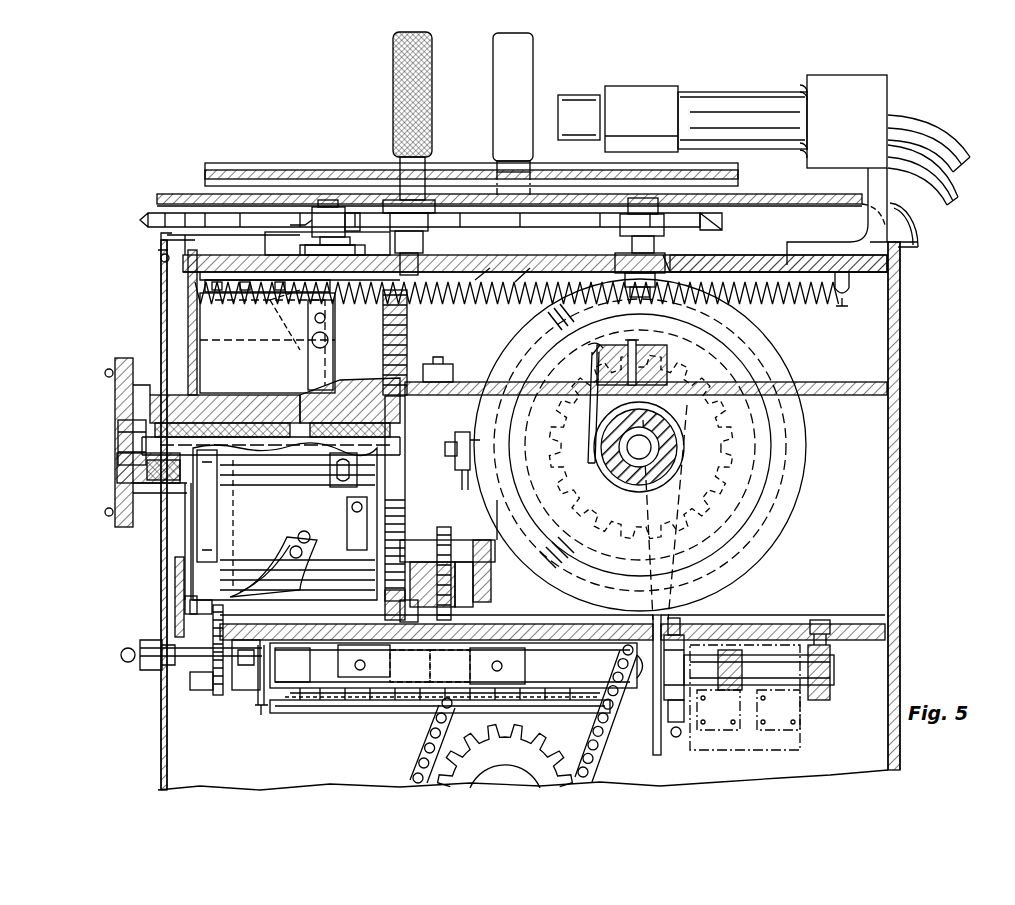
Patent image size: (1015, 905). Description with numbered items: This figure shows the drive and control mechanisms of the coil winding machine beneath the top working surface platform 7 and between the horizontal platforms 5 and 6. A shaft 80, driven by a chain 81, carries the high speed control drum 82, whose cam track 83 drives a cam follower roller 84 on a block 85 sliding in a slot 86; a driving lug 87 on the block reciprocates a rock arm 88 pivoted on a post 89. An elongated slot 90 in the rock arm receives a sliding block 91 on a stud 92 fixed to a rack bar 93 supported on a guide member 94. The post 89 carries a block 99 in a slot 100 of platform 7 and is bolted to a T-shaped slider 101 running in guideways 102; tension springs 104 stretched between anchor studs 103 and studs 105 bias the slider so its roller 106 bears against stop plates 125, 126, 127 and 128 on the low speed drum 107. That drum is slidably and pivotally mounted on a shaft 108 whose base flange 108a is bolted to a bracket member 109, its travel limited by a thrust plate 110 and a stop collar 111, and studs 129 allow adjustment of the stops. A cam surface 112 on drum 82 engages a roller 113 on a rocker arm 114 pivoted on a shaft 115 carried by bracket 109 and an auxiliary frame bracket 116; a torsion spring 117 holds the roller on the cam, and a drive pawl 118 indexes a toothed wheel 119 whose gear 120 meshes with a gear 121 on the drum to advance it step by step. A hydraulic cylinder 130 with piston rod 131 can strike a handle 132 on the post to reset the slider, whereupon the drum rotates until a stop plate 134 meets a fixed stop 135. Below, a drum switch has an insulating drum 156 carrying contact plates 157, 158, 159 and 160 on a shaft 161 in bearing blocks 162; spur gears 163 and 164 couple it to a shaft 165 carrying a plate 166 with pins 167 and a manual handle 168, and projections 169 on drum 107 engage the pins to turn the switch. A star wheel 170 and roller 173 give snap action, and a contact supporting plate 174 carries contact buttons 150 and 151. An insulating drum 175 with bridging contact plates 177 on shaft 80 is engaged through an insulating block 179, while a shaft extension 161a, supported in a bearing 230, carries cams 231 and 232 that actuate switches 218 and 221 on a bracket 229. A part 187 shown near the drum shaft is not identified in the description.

The horizontal platform 5 is at (540, 623).
The horizontal platform 6 is at (470, 383).
The top working surface platform 7 is at (226, 254).
The shaft 80 is at (664, 420).
The chain 81 is at (600, 742).
The high speed control drum 82 is at (530, 326).
The cam track 83 is at (770, 358).
The cam follower roller 84 is at (622, 255).
The block 85 is at (628, 268).
The slot 86 is at (700, 256).
The driving lug 87 is at (668, 233).
The rock arm 88 is at (712, 205).
The pivot post 89 is at (430, 205).
The elongated slot 90 is at (170, 218).
The sliding block 91 is at (310, 220).
The stud 92 is at (325, 207).
The rack bar 93 is at (355, 213).
The guide member 94 is at (270, 240).
The block 99 is at (452, 205).
The slot 100 is at (470, 215).
The T-shaped slider 101 is at (498, 266).
The guideways 102 is at (534, 267).
The anchor studs 103 is at (210, 292).
The tension springs 104 is at (414, 342).
The studs 105 is at (842, 308).
The roller 106 is at (165, 257).
The low speed drum 107 is at (267, 343).
The shaft 108 is at (118, 448).
The base flange 108a is at (395, 447).
The bracket member 109 is at (412, 600).
The thrust plate 110 is at (385, 405).
The stop collar 111 is at (118, 412).
The cam surface 112 is at (490, 432).
The roller 113 is at (462, 405).
The rocker arm 114 is at (462, 470).
The shaft 115 is at (500, 535).
The auxiliary frame bracket 116 is at (480, 588).
The torsion spring 117 is at (456, 573).
The drive pawl 118 is at (385, 515).
The toothed wheel 119 is at (485, 600).
The gear 120 is at (285, 521).
The gear 121 is at (384, 600).
The stop plate 125 is at (282, 305).
The stop plate 126 is at (310, 330).
The stop plate 127 is at (300, 398).
The stop plate 128 is at (345, 503).
The studs 129 is at (333, 470).
The hydraulic cylinder 130 is at (787, 170).
The piston rod 131 is at (570, 98).
The handle 132 is at (393, 110).
The stop plates 134 is at (217, 540).
The fixed stop 135 is at (175, 610).
The supply conductor 150 is at (370, 705).
The supply conductor 151 is at (555, 705).
The drum 156 is at (291, 665).
The contact plate 157 is at (364, 659).
The contact plate 158 is at (410, 666).
The contact plate 159 is at (462, 666).
The contact plate 160 is at (520, 690).
The shaft 161 is at (630, 650).
The shaft extension 161a is at (735, 650).
The bearing blocks 162 is at (255, 700).
The spur gear 163 is at (235, 692).
The second spur gear 164 is at (215, 612).
The shaft 165 is at (160, 652).
The plate 166 is at (185, 602).
The pins 167 is at (213, 608).
The manual actuating handle 168 is at (122, 655).
The projections 169 is at (185, 575).
The star wheel 170 is at (690, 630).
The roller 173 is at (678, 738).
The contact supporting plate 174 is at (330, 705).
The insulating drum 175 is at (665, 480).
The bridging contact plates 177 is at (620, 475).
The insulating block 179 is at (608, 352).
The lever 187 is at (585, 418).
The normally open switch 218 is at (718, 710).
The normally open cam switch 221 is at (778, 710).
The bracket 229 is at (770, 752).
The bearing 230 is at (831, 655).
The cam 231 is at (745, 650).
The cam 232 is at (800, 635).